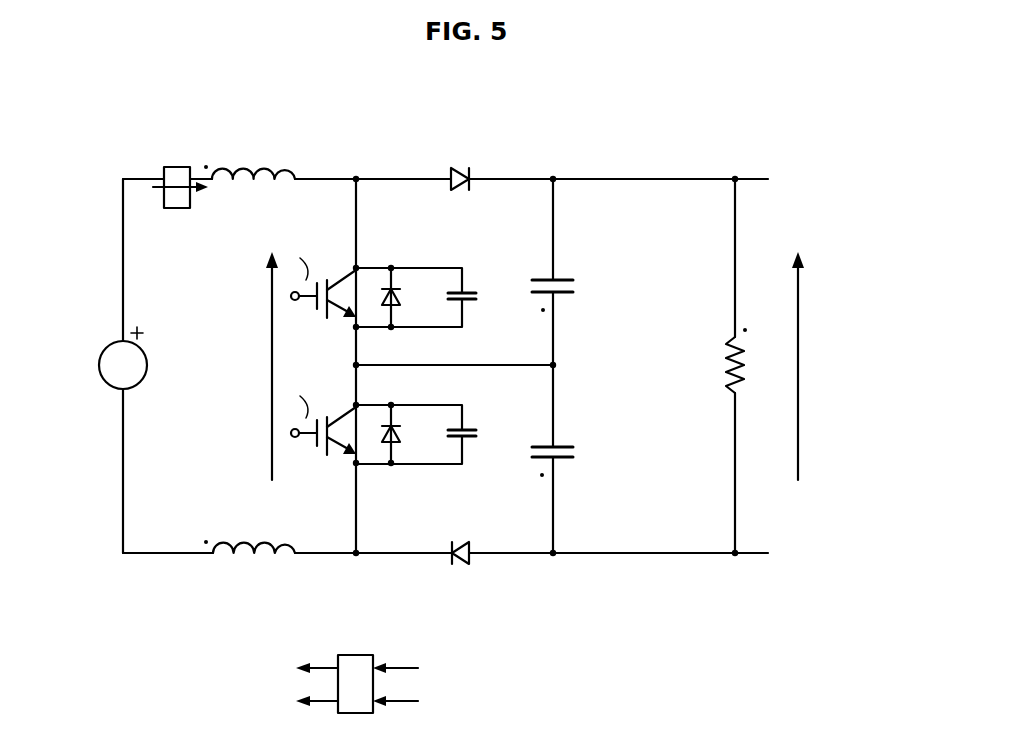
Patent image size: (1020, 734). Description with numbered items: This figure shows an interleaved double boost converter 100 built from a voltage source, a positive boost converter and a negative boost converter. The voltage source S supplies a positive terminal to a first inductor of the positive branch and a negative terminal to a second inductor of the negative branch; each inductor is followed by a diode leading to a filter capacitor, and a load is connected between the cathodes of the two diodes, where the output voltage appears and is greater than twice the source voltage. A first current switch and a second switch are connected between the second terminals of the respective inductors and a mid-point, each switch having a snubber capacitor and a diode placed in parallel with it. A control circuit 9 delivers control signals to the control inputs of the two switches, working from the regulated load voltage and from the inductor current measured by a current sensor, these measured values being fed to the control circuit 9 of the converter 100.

The interleaved double boost converter 100 is at (286, 93).
The control circuit 9 is at (356, 655).
The voltage source S is at (100, 362).